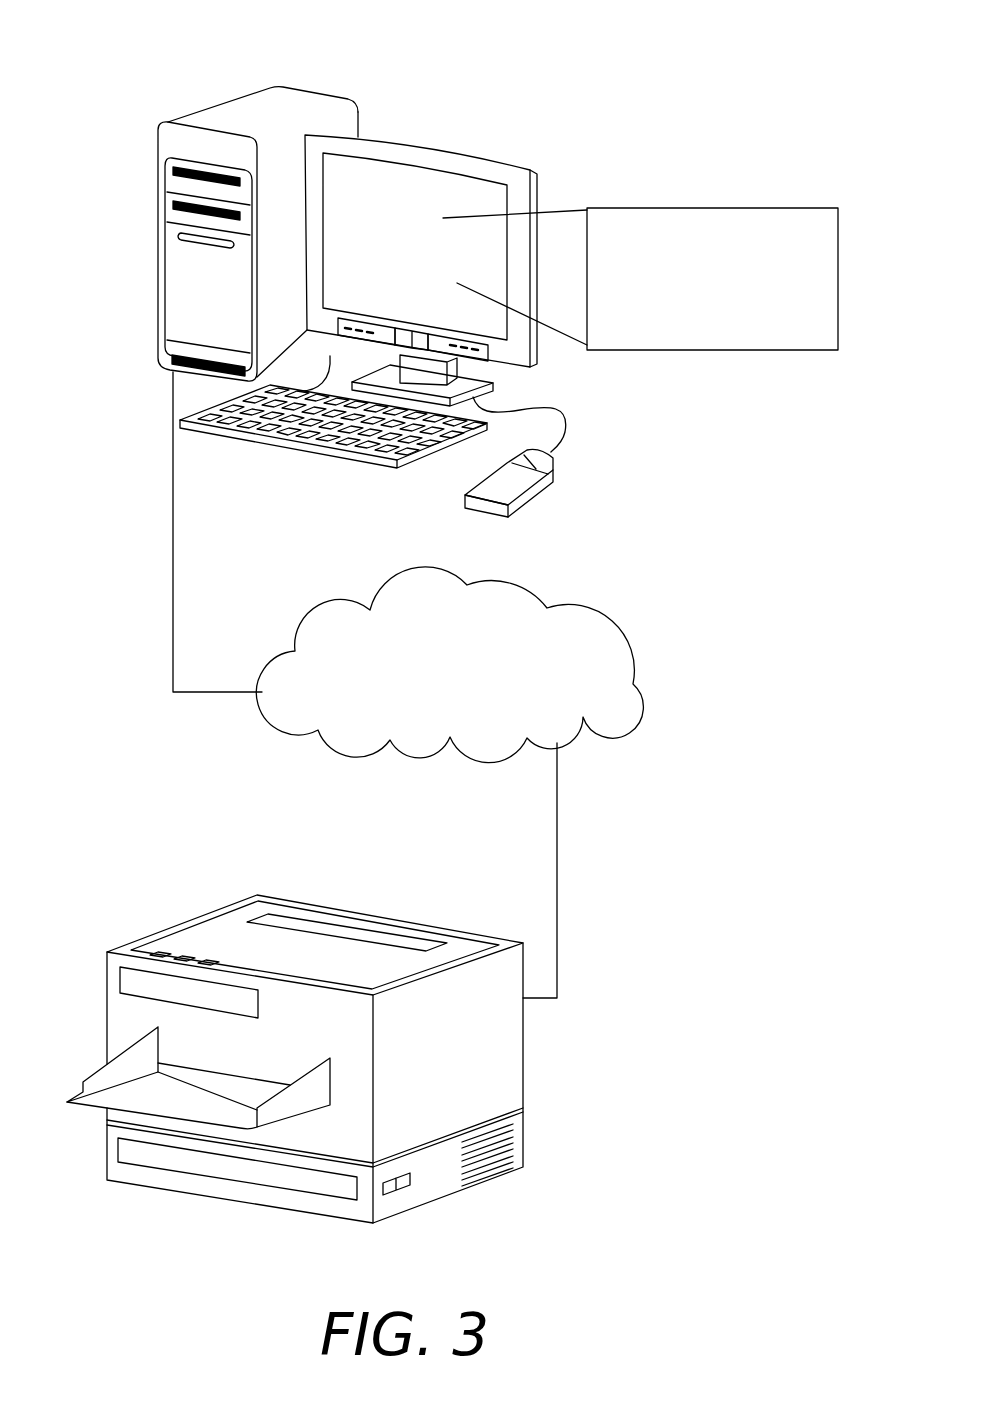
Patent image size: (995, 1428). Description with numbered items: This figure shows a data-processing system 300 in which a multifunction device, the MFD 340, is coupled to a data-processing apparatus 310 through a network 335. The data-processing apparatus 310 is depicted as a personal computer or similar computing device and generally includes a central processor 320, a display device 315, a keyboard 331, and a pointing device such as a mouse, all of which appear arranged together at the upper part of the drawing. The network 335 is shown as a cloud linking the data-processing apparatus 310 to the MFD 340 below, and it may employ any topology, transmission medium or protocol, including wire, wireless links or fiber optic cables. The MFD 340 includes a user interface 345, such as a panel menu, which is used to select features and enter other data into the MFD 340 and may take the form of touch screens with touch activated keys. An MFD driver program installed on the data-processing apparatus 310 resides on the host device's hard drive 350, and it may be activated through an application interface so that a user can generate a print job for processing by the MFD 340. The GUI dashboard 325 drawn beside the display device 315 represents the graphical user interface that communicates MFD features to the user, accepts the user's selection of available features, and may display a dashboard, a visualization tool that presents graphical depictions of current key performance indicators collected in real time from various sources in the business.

The system 300 is at (586, 63).
The data-processing apparatus 310 is at (468, 148).
The display device 315 is at (396, 186).
The central processor 320 is at (158, 340).
The GUI dashboard 325 is at (731, 207).
The keyboard 331 is at (331, 460).
The network 335 is at (597, 607).
The MFD 340 is at (218, 905).
The user interface 345 is at (154, 945).
The hard drive 350 is at (214, 106).